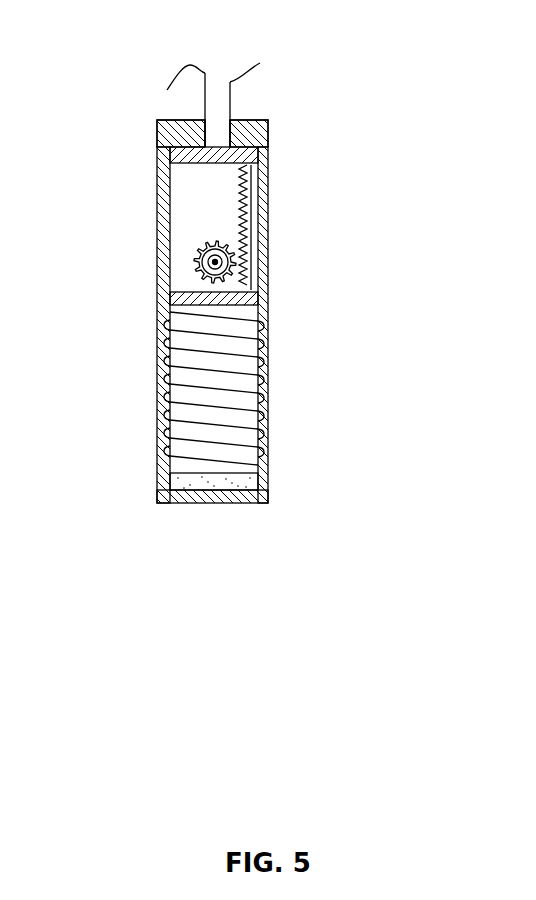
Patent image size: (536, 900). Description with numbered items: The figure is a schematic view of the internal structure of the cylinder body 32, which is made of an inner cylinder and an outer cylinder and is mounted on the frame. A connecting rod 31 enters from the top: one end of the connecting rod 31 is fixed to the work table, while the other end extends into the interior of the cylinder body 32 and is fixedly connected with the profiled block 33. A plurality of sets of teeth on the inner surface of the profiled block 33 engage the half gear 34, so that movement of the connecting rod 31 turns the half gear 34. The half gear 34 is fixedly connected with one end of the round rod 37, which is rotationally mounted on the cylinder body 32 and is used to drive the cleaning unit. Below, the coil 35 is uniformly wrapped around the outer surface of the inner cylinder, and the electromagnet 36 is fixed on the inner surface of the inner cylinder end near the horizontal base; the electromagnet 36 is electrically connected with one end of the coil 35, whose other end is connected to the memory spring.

The connecting rod 31 is at (216, 100).
The cylinder body 32 is at (264, 292).
The profiled block 33 is at (252, 186).
The half gear 34 is at (226, 246).
The coil 35 is at (263, 364).
The electromagnet 36 is at (229, 482).
The round rod 37 is at (214, 261).